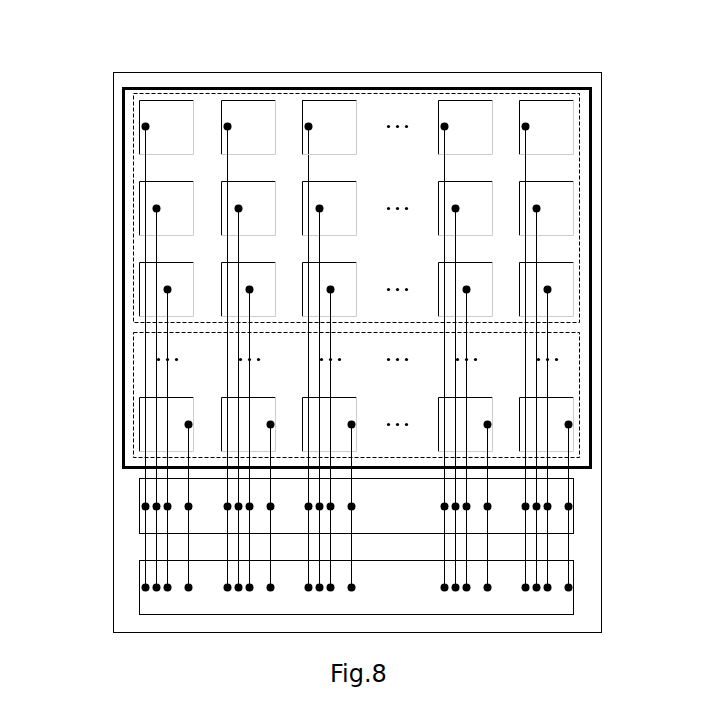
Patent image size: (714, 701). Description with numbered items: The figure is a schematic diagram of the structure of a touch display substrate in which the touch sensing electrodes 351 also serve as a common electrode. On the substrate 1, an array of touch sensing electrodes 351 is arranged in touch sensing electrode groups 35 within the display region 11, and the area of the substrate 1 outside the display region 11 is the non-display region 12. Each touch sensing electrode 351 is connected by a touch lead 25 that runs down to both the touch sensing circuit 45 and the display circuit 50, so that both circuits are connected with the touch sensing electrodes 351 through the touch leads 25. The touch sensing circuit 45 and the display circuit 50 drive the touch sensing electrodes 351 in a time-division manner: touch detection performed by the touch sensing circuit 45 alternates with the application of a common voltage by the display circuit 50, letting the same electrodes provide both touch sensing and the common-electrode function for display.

The substrate 1 is at (601, 225).
The display region 11 is at (592, 350).
The non-display region 12 is at (585, 505).
The touch leads 25 is at (143, 362).
The touch sensing electrode groups 35 is at (580, 112).
The touch sensing electrodes 351 is at (332, 100).
The touch sensing circuit 45 is at (140, 522).
The display circuit 50 is at (573, 573).